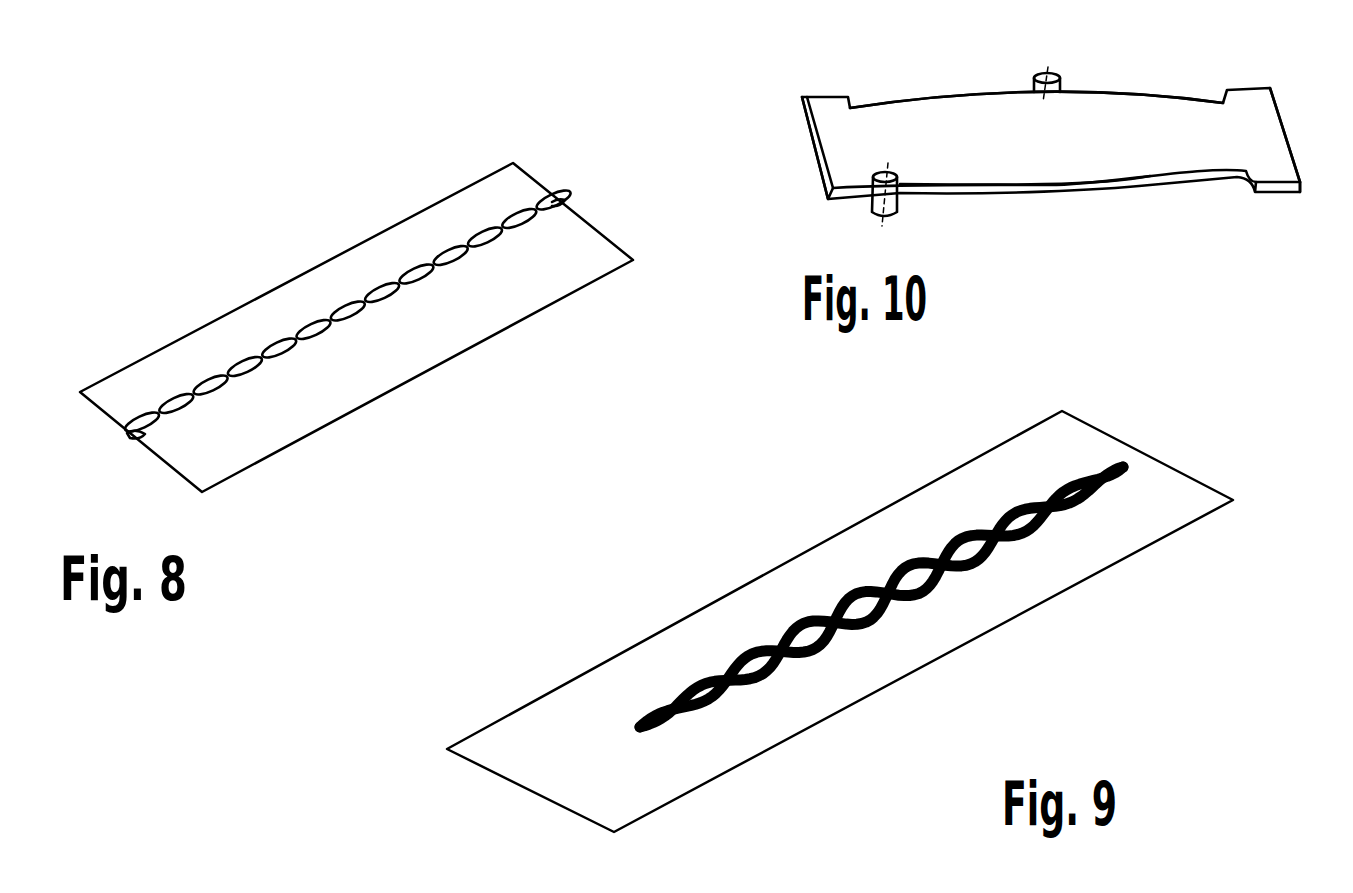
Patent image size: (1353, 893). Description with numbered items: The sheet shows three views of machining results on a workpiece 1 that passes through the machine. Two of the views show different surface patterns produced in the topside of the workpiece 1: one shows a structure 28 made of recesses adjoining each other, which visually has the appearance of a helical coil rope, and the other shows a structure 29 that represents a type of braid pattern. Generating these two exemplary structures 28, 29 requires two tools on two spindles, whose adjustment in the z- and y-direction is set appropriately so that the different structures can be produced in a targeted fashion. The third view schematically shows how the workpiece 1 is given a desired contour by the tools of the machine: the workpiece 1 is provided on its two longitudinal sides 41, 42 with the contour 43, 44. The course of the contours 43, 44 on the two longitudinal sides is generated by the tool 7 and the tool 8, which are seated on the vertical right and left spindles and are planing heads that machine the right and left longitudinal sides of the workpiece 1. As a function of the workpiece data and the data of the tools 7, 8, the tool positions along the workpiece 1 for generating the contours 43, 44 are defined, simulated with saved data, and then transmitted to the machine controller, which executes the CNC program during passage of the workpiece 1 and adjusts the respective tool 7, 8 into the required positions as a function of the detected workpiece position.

In FIG. 10, the workpiece 1 is at (1127, 155).
In FIG. 10, the tool 7 is at (1062, 77).
In FIG. 10, the tool 8 is at (900, 205).
In FIG. 8, the structure 28 is at (432, 298).
In FIG. 9, the structure 29 is at (983, 567).
In FIG. 10, the longitudinal side 41 is at (832, 198).
In FIG. 10, the longitudinal side 42 is at (1255, 90).
In FIG. 10, the contour 43 is at (1032, 192).
In FIG. 10, the contour 44 is at (1123, 92).